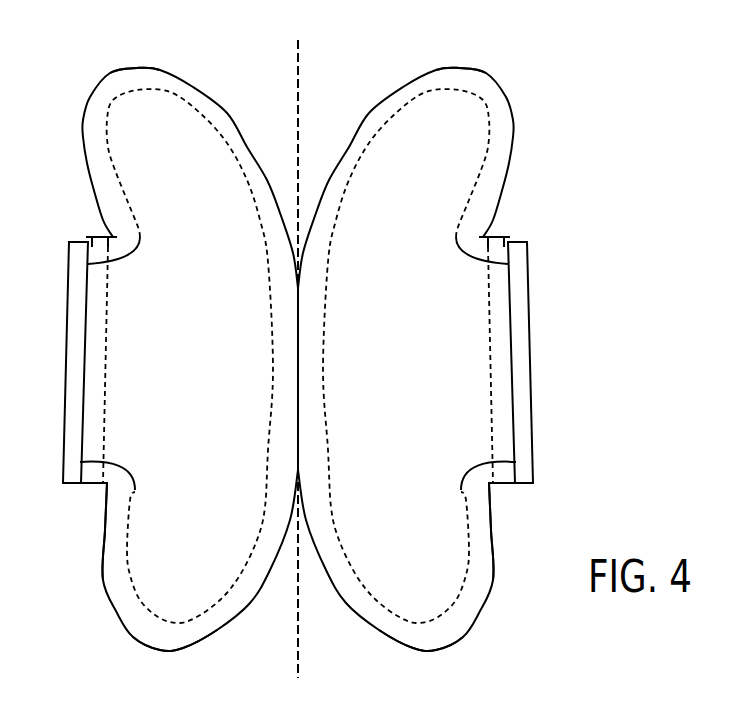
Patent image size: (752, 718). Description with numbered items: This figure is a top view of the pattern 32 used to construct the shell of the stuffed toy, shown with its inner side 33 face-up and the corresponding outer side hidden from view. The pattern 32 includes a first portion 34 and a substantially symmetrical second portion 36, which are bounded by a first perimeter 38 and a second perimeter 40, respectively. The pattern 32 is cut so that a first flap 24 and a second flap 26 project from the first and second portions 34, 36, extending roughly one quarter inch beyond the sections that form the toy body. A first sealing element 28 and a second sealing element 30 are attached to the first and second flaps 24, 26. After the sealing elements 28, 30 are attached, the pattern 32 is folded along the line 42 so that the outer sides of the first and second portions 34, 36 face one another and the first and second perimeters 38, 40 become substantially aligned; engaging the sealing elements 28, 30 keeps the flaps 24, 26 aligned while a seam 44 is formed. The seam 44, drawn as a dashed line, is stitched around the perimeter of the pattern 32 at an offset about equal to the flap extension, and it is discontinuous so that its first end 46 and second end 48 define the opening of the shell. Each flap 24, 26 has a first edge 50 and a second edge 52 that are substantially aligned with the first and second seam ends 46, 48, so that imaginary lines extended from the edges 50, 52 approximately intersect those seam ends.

The first flap 24 is at (98, 236).
The second flap 26 is at (493, 238).
The first sealing element 28 is at (73, 337).
The second sealing element 30 is at (527, 337).
The pattern 32 is at (137, 67).
The inner side 33 is at (440, 115).
The first portion 34 is at (187, 603).
The second portion 36 is at (407, 600).
The first perimeter 38 is at (103, 582).
The second perimeter 40 is at (497, 580).
The line 42 is at (300, 600).
The seam 44 is at (212, 133).
The first end 46 is at (88, 264).
The second end 48 is at (80, 462).
The first edge 50 is at (92, 237).
The second edge 52 is at (93, 490).